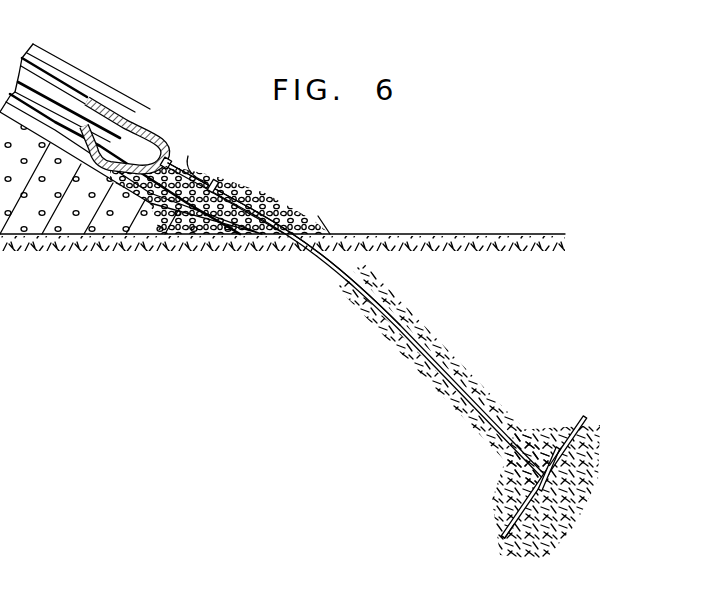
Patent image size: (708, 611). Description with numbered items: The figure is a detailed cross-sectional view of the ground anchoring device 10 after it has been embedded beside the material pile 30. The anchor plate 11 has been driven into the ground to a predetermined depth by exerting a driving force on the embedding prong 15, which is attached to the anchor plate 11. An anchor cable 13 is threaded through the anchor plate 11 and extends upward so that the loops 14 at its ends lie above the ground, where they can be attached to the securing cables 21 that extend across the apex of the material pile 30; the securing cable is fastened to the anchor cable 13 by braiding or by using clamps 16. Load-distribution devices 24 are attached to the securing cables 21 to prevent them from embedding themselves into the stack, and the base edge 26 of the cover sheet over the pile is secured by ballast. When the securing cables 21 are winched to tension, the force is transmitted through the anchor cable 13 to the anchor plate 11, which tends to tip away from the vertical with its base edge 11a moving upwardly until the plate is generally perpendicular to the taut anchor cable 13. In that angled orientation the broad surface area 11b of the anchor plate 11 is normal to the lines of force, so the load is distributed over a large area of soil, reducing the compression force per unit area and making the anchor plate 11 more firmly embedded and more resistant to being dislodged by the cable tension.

The anchor device 10 is at (509, 497).
The anchor plate 11 is at (523, 518).
The base edge 11a is at (500, 541).
The broad surface area 11b is at (547, 452).
The anchor cable 13 is at (384, 304).
The loops 14 is at (265, 200).
The embedding prong 15 is at (564, 460).
The clamps 16 is at (219, 184).
The securing cables 21 is at (67, 98).
The load-distribution devices 24 is at (131, 130).
The base edge 26 is at (313, 223).
The material pile 30 is at (34, 214).